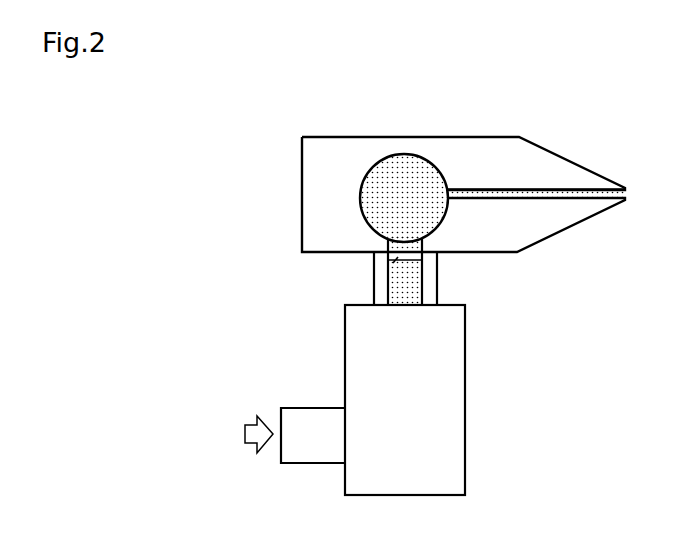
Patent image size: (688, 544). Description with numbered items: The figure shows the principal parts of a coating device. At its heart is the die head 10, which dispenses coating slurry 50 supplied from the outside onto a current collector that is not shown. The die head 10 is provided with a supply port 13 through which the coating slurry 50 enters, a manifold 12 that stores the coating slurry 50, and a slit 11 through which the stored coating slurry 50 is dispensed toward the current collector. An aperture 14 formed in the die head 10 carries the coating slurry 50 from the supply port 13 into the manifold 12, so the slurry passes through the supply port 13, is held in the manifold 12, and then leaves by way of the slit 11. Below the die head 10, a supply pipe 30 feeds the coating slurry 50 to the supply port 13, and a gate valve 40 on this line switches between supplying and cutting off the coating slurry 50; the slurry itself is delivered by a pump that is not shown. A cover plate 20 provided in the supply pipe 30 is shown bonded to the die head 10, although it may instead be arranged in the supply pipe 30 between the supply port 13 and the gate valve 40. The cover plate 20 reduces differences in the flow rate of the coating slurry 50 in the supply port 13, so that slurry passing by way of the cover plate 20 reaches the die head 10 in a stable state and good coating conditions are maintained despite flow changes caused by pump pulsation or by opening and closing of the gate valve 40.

The die head 10 is at (453, 137).
The slit 11 is at (573, 188).
The manifold 12 is at (403, 154).
The supply port 13 is at (423, 248).
The aperture 14 is at (388, 240).
The cover plate 20 is at (374, 271).
The supply pipe 30 is at (432, 291).
The gate valve 40 is at (465, 393).
The coating slurry 50 is at (378, 192).